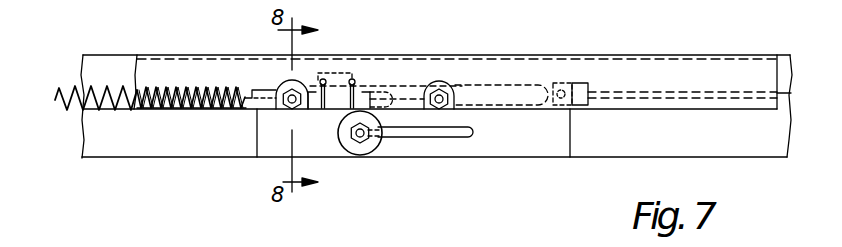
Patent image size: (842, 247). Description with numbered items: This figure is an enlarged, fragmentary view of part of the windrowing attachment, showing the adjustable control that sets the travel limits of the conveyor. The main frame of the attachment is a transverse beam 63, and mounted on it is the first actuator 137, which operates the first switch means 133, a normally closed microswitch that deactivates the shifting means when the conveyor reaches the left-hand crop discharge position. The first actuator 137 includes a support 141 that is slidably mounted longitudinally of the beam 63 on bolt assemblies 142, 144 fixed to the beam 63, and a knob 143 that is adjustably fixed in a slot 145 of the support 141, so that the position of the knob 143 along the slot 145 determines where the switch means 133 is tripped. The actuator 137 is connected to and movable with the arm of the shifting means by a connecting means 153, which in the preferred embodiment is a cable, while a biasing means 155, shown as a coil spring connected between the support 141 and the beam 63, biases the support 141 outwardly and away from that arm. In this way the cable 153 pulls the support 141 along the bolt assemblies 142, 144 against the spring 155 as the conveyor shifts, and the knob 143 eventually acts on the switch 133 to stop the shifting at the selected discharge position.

The transverse beam 63 is at (207, 147).
The first switch means 133 is at (357, 64).
The first actuator 137 is at (357, 178).
The support 141 is at (545, 143).
The bolt assembly 142 is at (284, 83).
The knob 143 is at (372, 153).
The bolt assembly 144 is at (438, 82).
The slot 145 is at (449, 132).
The connecting means 153 is at (644, 98).
The biasing means 155 is at (121, 112).